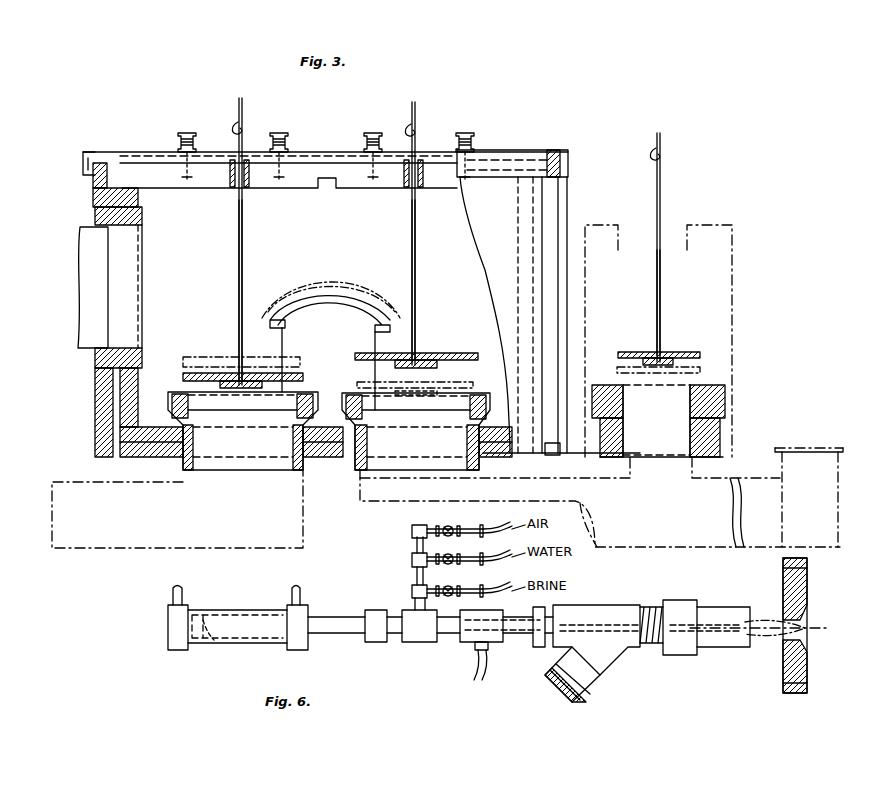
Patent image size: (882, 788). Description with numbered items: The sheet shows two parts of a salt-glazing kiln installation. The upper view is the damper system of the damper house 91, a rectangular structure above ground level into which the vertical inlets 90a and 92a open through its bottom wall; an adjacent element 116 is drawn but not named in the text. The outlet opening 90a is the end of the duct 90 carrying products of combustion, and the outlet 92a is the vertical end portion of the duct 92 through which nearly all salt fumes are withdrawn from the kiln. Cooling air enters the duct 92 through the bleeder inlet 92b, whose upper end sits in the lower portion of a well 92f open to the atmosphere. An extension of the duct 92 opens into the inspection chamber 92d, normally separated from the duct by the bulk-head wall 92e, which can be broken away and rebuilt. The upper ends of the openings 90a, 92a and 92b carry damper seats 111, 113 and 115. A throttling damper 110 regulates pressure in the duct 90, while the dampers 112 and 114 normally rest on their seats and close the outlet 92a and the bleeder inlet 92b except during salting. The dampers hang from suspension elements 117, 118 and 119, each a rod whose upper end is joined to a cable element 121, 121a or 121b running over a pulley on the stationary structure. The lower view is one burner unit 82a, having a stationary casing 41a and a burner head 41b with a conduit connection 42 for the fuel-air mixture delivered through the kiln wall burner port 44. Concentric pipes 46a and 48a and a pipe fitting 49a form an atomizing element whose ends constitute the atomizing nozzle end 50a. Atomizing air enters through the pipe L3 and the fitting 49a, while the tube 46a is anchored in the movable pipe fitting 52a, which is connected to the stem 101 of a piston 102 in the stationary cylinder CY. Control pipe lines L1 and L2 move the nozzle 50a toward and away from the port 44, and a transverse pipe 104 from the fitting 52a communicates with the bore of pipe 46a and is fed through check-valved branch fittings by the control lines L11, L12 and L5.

In FIG. 3, the damper house 91 is at (76, 213).
In FIG. 3, the side wall box 116 is at (124, 275).
In FIG. 3, the suspension element 117 is at (244, 250).
In FIG. 3, the suspension element 118 is at (417, 264).
In FIG. 3, the suspension element 119 is at (662, 297).
In FIG. 3, the cable element 121 is at (244, 112).
In FIG. 3, the cable element 121a is at (417, 112).
In FIG. 3, the cable element 121b is at (662, 148).
In FIG. 3, the throttling damper 110 is at (212, 373).
In FIG. 3, the damper seat 111 is at (186, 395).
In FIG. 3, the damper 112 is at (449, 352).
In FIG. 3, the damper seat 113 is at (478, 392).
In FIG. 3, the damper 114 is at (631, 352).
In FIG. 3, the damper seat 115 is at (623, 385).
In FIG. 3, the duct 90 is at (177, 509).
In FIG. 3, the outlet opening 90a is at (243, 431).
In FIG. 3, the duct 92 is at (600, 502).
In FIG. 3, the outlet 92a is at (416, 431).
In FIG. 3, the bleeder inlet 92b is at (658, 421).
In FIG. 3, the inspection chamber 92d is at (800, 462).
In FIG. 3, the bulk-head wall 92e is at (784, 506).
In FIG. 3, the well 92f is at (735, 333).
In FIG. 6, the cylinder CY is at (233, 612).
In FIG. 6, the control pipe line L1 is at (182, 598).
In FIG. 6, the control pipe line L2 is at (302, 596).
In FIG. 6, the pipe L3 is at (474, 672).
In FIG. 6, the control pipe line L5 is at (480, 516).
In FIG. 6, the control pipe line L11 is at (480, 578).
In FIG. 6, the control pipe line L12 is at (480, 546).
In FIG. 6, the stem 101 is at (337, 617).
In FIG. 6, the piston 102 is at (214, 642).
In FIG. 6, the pipe 104 is at (415, 604).
In FIG. 6, the movable pipe fitting 52a is at (418, 636).
In FIG. 6, the pipe 46a is at (452, 634).
In FIG. 6, the pipe fitting 49a is at (493, 642).
In FIG. 6, the pipe 48a is at (520, 642).
In FIG. 6, the burner unit 82a is at (538, 606).
In FIG. 6, the stationary casing 41a is at (617, 605).
In FIG. 6, the burner head 41b is at (737, 640).
In FIG. 6, the conduit connection 42 is at (572, 692).
In FIG. 6, the kiln wall burner port 44 is at (786, 598).
In FIG. 6, the atomizing nozzle end 50a is at (807, 628).